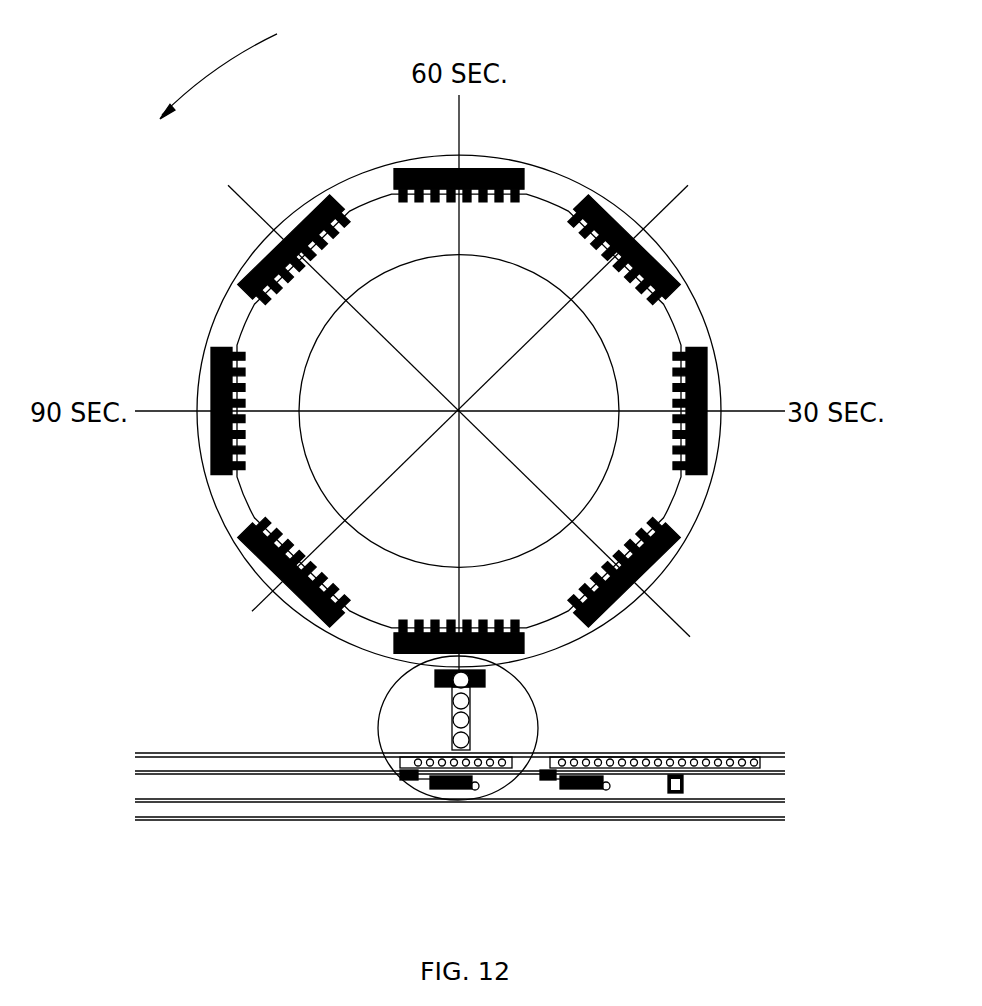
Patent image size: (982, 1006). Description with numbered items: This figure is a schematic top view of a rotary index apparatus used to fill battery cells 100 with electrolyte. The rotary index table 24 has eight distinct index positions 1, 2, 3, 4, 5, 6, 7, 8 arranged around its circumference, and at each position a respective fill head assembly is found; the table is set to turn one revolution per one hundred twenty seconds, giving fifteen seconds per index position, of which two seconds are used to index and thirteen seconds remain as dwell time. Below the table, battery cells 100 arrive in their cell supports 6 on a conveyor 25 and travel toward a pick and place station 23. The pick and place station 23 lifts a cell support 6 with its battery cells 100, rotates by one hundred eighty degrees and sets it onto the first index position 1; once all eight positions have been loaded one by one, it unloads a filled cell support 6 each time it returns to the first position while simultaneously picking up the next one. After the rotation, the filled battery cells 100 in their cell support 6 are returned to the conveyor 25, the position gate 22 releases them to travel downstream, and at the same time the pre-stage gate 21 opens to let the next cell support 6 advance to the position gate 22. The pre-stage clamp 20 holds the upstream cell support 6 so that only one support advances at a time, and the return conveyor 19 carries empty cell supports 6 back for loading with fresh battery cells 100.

The index position 1 is at (459, 614).
The index position 2 is at (624, 572).
The index position 3 is at (670, 410).
The index position 4 is at (624, 250).
The index position 5 is at (459, 201).
The cell support 6 is at (746, 736).
The index position 7 is at (242, 410).
The index position 8 is at (294, 572).
The battery cell 100 is at (647, 758).
The return conveyor 19 is at (770, 804).
The pre-stage clamp 20 is at (683, 788).
The pre-stage gate 21 is at (606, 788).
The position gate 22 is at (472, 783).
The pick and place station 23 is at (470, 707).
The rotary index table 24 is at (531, 237).
The conveyor 25 is at (768, 762).